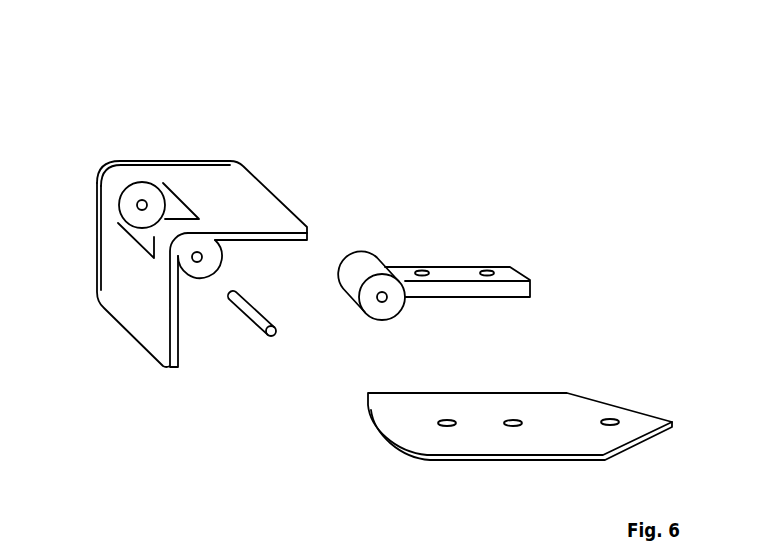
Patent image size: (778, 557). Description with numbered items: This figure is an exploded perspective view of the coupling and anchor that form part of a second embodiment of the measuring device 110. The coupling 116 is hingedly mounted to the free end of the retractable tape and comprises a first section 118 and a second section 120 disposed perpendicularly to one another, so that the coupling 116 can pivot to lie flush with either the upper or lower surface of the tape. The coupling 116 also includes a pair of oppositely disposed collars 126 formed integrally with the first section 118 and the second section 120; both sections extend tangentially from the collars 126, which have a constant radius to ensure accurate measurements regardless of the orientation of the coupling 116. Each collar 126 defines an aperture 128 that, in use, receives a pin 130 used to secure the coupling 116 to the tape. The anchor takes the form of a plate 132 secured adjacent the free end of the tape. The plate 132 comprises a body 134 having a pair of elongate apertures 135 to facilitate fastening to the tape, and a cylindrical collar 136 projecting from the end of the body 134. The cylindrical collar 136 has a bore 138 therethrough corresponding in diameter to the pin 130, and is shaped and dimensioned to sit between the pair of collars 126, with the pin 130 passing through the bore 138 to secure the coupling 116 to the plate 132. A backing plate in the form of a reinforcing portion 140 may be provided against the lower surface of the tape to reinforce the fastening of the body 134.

The measuring device 110 is at (353, 105).
The coupling 116 is at (185, 146).
The first section 118 is at (250, 183).
The second section 120 is at (123, 303).
The collars 126 is at (130, 192).
The aperture 128 is at (137, 207).
The pin 130 is at (262, 333).
The plate 132 is at (536, 270).
The body 134 is at (455, 273).
The elongate apertures 135 is at (423, 268).
The cylindrical collar 136 is at (355, 258).
The bore 138 is at (378, 302).
The reinforcing portion 140 is at (533, 402).